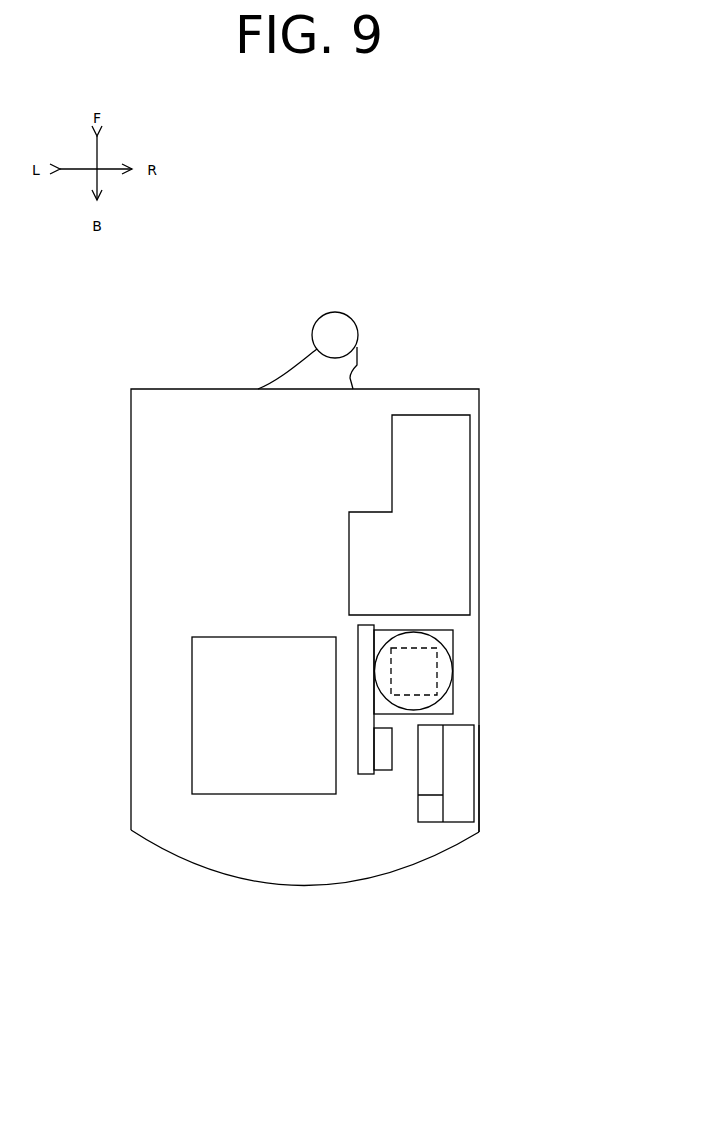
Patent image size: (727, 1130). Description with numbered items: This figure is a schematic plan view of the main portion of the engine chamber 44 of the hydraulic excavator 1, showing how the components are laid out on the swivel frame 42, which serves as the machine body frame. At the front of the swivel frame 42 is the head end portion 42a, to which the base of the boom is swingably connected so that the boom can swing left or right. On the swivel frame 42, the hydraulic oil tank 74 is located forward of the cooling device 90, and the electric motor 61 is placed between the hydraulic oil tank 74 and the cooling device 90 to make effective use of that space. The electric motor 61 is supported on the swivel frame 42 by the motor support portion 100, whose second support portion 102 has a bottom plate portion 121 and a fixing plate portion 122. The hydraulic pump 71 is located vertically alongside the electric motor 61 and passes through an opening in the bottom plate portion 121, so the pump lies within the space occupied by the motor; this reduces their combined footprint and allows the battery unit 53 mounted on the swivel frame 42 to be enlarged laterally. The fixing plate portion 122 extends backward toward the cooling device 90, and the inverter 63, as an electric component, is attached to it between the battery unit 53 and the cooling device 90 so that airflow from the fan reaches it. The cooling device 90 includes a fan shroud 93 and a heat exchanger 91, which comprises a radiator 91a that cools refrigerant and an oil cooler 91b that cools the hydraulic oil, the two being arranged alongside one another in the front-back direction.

The hydraulic excavator 1 is at (511, 253).
The swivel frame 42 is at (143, 500).
The head end portion 42a is at (347, 320).
The engine chamber 44 is at (117, 782).
The battery unit 53 is at (253, 760).
The hydraulic oil tank 74 is at (437, 512).
The fixing plate portion 122 is at (365, 758).
The motor support portion 100 is at (484, 644).
The second support portion 102 is at (484, 644).
The bottom plate portion 121 is at (445, 638).
The electric motor 61 is at (443, 657).
The hydraulic pump 71 is at (438, 683).
The inverter 63 is at (383, 762).
The fan shroud 93 is at (462, 747).
The cooling device 90 is at (483, 787).
The heat exchanger 91 is at (477, 817).
The radiator 91a is at (477, 817).
The oil cooler 91b is at (435, 817).